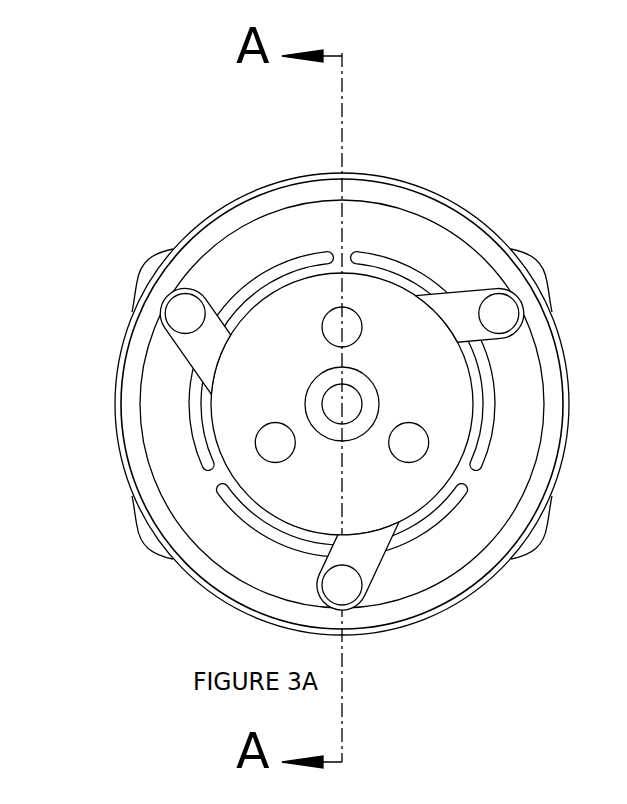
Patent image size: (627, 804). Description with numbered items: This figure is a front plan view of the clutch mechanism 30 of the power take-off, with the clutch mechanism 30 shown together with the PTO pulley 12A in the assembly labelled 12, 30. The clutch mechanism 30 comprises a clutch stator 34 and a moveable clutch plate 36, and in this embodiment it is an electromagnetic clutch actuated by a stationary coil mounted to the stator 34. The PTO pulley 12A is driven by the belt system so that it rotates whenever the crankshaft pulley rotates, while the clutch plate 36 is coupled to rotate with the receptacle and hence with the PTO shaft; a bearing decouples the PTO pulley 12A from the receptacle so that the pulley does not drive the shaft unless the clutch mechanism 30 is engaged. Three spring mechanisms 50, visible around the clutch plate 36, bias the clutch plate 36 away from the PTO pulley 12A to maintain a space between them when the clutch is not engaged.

The clutch assembly 12 is at (342, 364).
The clutch mechanism 30 is at (342, 404).
The PTO pulley 12A is at (421, 193).
The clutch stator 34 is at (145, 262).
The clutch plate 36 is at (387, 310).
The spring mechanisms 50 is at (458, 310).